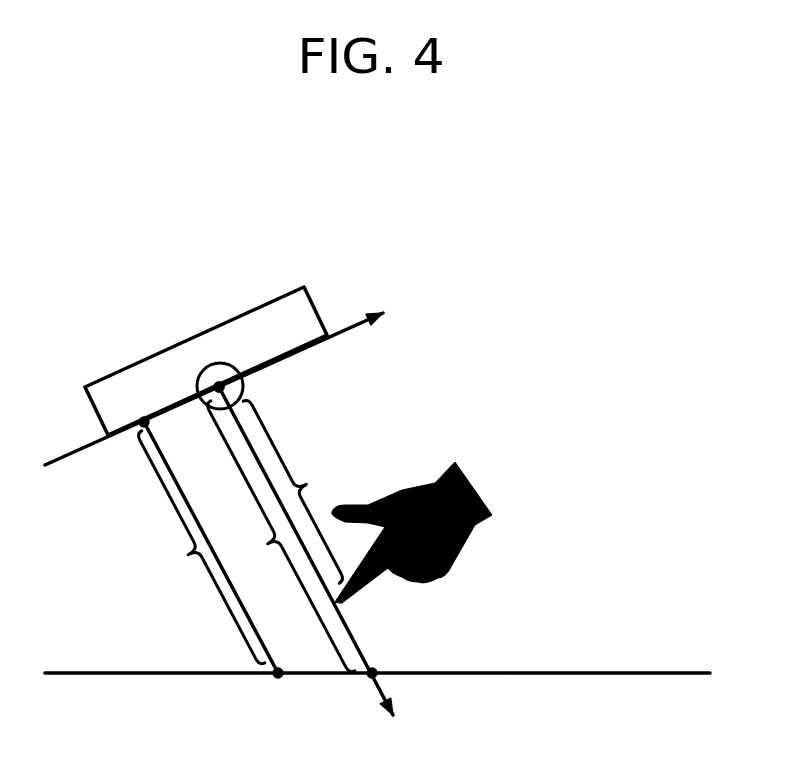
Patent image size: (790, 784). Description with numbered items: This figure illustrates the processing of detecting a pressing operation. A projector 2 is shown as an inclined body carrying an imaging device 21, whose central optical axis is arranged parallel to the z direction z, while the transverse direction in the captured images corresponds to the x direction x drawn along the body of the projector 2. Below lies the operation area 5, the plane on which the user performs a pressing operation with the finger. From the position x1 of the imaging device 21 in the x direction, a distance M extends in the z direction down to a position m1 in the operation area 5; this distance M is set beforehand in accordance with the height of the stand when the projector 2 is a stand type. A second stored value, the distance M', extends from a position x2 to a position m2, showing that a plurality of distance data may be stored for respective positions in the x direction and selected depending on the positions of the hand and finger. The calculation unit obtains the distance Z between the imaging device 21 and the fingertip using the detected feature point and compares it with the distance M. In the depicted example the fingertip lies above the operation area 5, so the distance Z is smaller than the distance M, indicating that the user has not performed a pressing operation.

The projector 2 is at (155, 357).
The imaging device 21 is at (247, 381).
The operation area 5 is at (600, 673).
The position of the imaging device in the x direction x1 is at (219, 387).
The position in the x direction x2 is at (144, 422).
The position in the z direction m1 is at (355, 689).
The position in the z direction m2 is at (260, 689).
The distance M is at (281, 536).
The distance M' is at (208, 547).
The distance Z is at (292, 491).
The x direction x is at (224, 372).
The z direction z is at (313, 567).